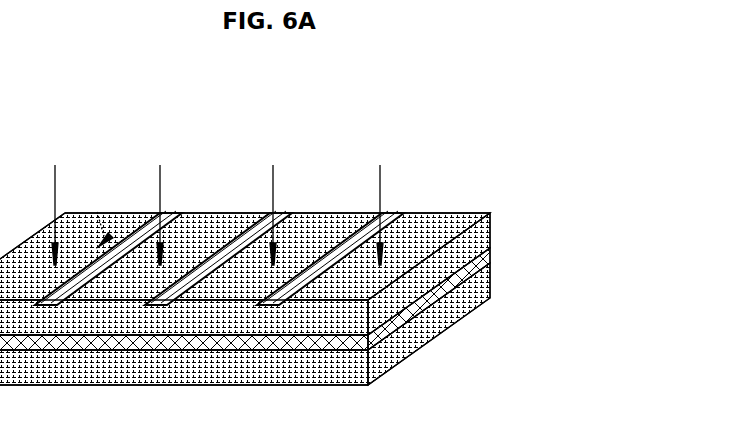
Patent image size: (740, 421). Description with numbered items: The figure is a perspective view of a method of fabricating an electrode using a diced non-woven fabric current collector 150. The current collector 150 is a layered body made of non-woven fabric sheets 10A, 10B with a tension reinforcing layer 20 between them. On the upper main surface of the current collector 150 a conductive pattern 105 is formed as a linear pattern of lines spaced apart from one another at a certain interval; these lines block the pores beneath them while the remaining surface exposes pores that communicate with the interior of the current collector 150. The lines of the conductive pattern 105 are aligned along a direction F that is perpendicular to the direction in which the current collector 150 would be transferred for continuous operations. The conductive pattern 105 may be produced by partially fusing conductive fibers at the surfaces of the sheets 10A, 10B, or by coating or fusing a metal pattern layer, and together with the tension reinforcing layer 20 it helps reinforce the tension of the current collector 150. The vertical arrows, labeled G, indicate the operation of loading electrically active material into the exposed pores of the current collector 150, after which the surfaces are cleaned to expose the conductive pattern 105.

The non-woven fabric current collector 150 is at (413, 160).
The non-woven fabric sheet 10A is at (490, 228).
The tension reinforcing layer 20 is at (490, 250).
The non-woven fabric sheet 10B is at (490, 281).
The conductive pattern 105 is at (370, 213).
The gap G is at (55, 198).
The direction F is at (97, 210).